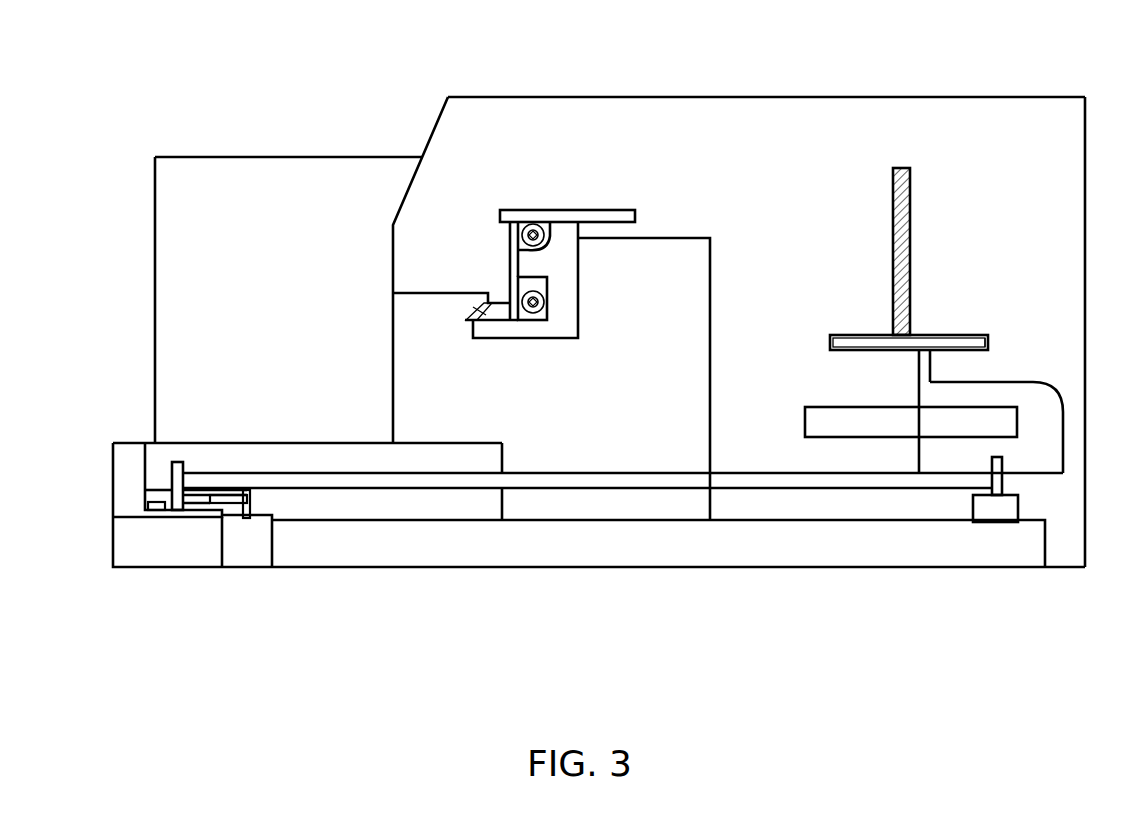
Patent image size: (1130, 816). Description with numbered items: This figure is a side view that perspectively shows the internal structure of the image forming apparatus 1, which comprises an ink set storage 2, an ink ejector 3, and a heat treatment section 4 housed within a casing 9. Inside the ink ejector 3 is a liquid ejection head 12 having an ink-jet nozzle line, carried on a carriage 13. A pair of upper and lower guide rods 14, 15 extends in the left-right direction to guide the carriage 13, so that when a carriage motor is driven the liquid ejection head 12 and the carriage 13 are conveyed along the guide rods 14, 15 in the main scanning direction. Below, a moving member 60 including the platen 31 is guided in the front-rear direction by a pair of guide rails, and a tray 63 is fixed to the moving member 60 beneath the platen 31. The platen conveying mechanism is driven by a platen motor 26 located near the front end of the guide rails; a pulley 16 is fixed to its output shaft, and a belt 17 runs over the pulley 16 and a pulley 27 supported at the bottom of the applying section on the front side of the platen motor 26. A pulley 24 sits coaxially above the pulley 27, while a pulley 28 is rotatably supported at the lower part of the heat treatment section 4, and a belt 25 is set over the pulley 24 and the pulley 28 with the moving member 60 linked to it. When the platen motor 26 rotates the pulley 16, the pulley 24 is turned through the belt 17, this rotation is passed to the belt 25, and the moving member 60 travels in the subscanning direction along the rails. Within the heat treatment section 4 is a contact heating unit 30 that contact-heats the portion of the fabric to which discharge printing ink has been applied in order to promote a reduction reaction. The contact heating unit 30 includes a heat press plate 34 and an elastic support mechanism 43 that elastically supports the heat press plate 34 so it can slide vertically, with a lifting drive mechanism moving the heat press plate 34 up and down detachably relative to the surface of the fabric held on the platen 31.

The image forming apparatus 1 is at (850, 50).
The ink set storage 2 is at (566, 97).
The ink ejector 3 is at (248, 173).
The heat treatment section 4 is at (1025, 97).
The casing 9 is at (433, 128).
The liquid ejection head 12 is at (477, 303).
The carriage 13 is at (518, 212).
The upper guide rod 14 is at (543, 241).
The lower guide rod 15 is at (547, 302).
The pulley 16 is at (247, 490).
The belt 17 is at (230, 490).
The pulley 24 is at (177, 462).
The belt 25 is at (445, 482).
The platen motor 26 is at (243, 557).
The pulley 27 is at (148, 503).
The pulley 28 is at (997, 495).
The contact heating unit 30 is at (833, 231).
The platen 31 is at (830, 342).
The heat press plate 34 is at (988, 340).
The elastic support mechanism 43 is at (910, 211).
The moving member 60 is at (1055, 460).
The tray 63 is at (833, 428).